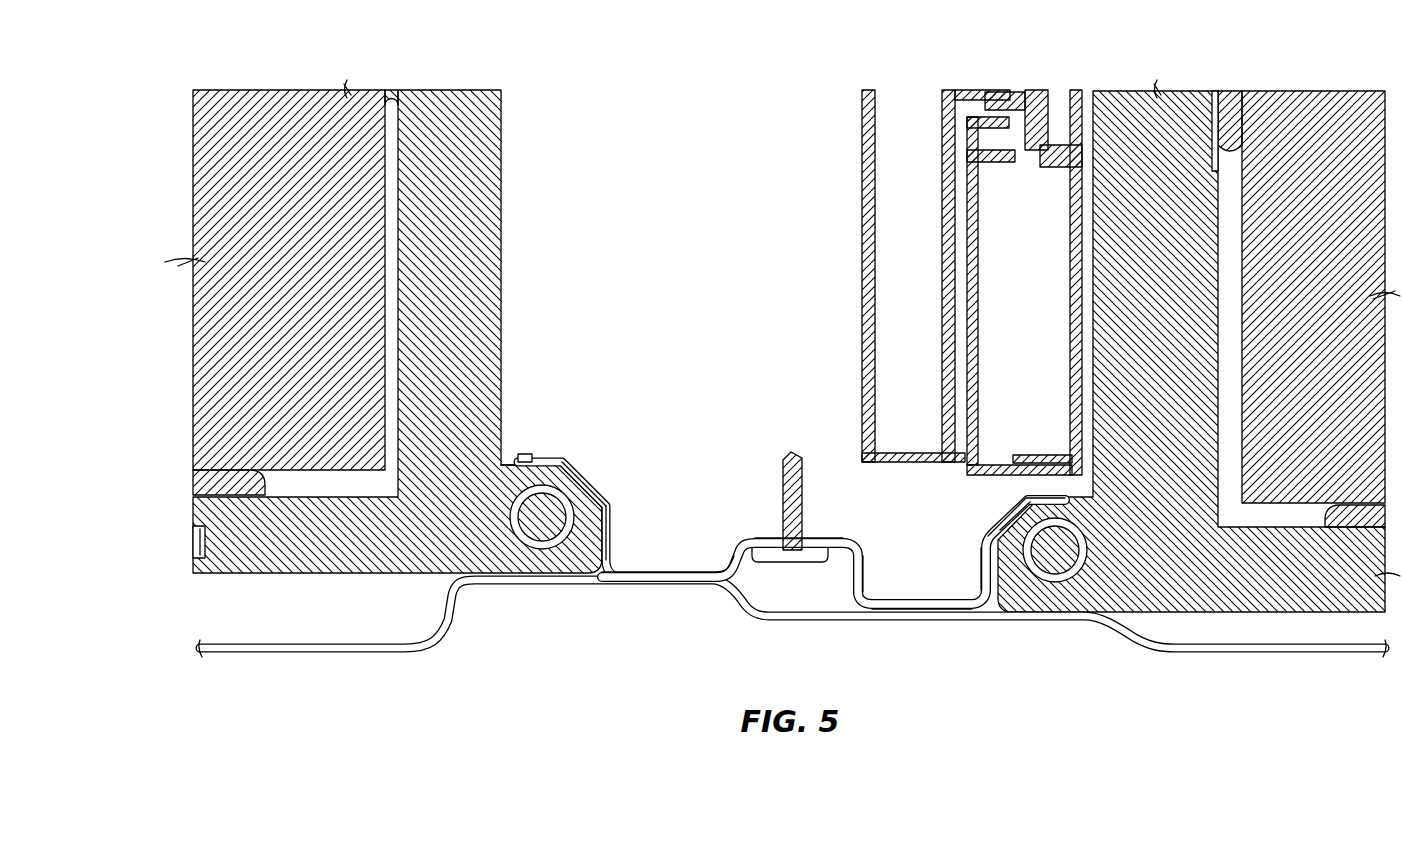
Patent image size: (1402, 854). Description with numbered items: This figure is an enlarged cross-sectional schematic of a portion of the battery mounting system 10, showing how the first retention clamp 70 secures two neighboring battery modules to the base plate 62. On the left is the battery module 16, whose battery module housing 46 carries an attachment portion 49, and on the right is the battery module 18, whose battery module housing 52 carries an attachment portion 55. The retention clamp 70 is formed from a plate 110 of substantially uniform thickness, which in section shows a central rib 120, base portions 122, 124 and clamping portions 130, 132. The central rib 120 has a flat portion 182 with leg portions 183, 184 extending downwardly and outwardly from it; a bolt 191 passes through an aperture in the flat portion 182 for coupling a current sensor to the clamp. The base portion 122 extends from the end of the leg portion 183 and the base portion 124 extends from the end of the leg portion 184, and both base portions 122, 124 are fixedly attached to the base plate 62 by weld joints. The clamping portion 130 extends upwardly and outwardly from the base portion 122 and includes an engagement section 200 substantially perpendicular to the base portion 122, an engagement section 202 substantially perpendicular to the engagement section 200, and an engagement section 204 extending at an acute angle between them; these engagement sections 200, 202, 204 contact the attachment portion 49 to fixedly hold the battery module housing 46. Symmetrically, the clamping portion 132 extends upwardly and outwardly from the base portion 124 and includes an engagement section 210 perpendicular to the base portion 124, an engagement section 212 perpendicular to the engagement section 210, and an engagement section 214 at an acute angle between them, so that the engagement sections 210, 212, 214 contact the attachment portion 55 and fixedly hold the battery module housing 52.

The battery mounting system 10 is at (895, 77).
The battery module 16 is at (487, 236).
The battery module 18 is at (1112, 230).
The battery module housing 46 is at (482, 306).
The first attachment portion 49 is at (572, 555).
The battery module housing 52 is at (1110, 340).
The first attachment portion 55 is at (1030, 592).
The base plate 62 is at (762, 619).
The first retention clamp 70 is at (611, 501).
The plate 110 is at (833, 579).
The central rib 120 is at (757, 538).
The base portion 122 is at (637, 583).
The base portion 124 is at (906, 612).
The clamping portion 130 is at (577, 457).
The clamping portion 132 is at (990, 522).
The flat portion 182 is at (736, 538).
The leg portion 183 is at (720, 553).
The leg portion 184 is at (870, 592).
The bolt 191 is at (796, 508).
The engagement section 200 is at (610, 530).
The engagement section 202 is at (542, 457).
The engagement section 204 is at (591, 488).
The engagement section 210 is at (982, 562).
The engagement section 212 is at (1045, 469).
The engagement section 214 is at (1004, 512).